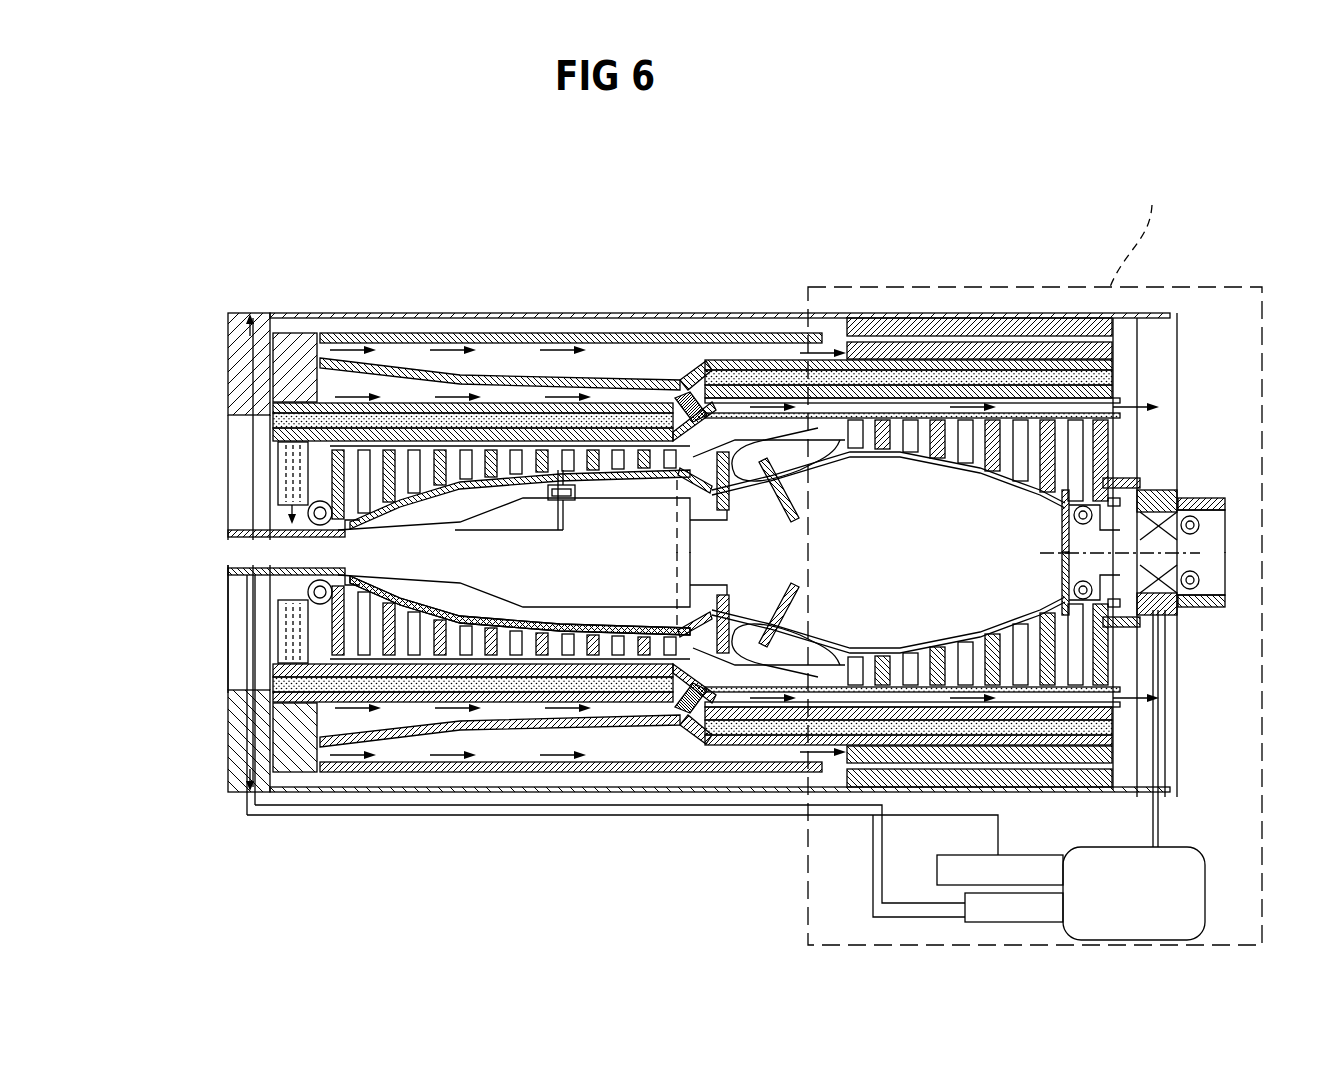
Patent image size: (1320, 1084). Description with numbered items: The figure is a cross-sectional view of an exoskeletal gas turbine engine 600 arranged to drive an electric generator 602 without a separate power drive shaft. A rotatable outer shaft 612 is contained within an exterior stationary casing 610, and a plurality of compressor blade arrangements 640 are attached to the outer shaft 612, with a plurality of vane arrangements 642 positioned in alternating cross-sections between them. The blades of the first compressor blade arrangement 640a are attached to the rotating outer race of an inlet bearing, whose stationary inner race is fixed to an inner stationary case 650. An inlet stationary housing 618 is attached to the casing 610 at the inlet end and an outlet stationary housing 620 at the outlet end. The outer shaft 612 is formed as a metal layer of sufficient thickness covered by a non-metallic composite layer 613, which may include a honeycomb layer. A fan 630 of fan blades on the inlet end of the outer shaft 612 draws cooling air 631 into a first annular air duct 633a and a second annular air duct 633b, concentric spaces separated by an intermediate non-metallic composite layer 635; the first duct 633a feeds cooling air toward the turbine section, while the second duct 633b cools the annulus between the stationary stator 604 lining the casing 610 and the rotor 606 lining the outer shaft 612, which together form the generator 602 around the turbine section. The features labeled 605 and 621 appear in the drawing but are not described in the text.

The exoskeletal gas turbine engine 600 is at (350, 185).
The electric generator 602 is at (957, 276).
The stationary stator 604 is at (905, 345).
The combustor 605 is at (783, 456).
The rotor 606 is at (870, 325).
The casing 610 is at (445, 318).
The rotatable outer shaft 612 is at (587, 326).
The non-metallic composite layer 613 is at (610, 400).
The inlet stationary housing 618 is at (228, 440).
The outlet stationary housing 620 is at (1188, 346).
The rear bearing assembly 621 is at (1228, 382).
The fan 630 is at (268, 316).
The cooling air 631 is at (330, 332).
The first annular air duct 633a is at (388, 386).
The second annular air duct 633b is at (693, 352).
The intermediate non-metallic composite layer 635 is at (487, 388).
The compressor blade arrangements 640 is at (345, 472).
The first compressor blade arrangement 640a is at (330, 632).
The vane arrangements 642 is at (452, 640).
The inner stationary case 650 is at (600, 470).